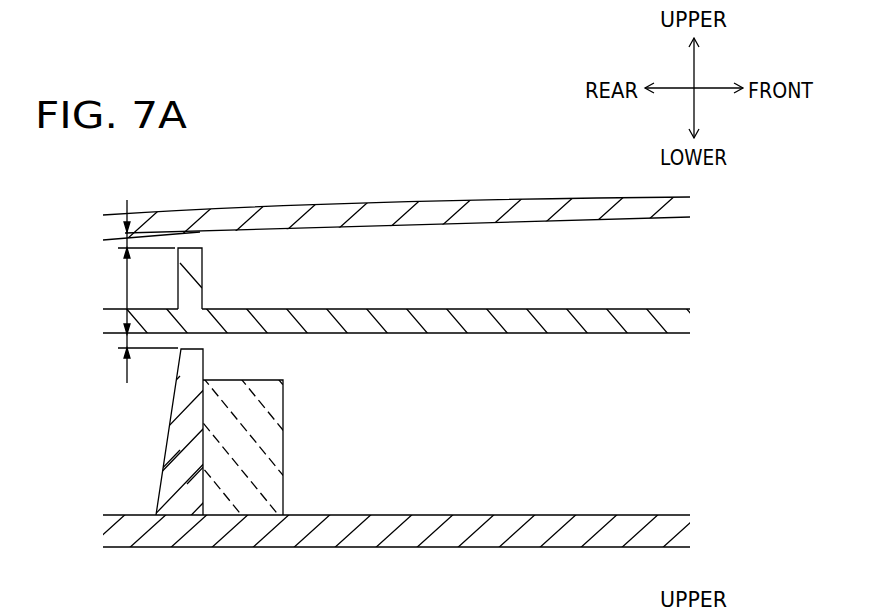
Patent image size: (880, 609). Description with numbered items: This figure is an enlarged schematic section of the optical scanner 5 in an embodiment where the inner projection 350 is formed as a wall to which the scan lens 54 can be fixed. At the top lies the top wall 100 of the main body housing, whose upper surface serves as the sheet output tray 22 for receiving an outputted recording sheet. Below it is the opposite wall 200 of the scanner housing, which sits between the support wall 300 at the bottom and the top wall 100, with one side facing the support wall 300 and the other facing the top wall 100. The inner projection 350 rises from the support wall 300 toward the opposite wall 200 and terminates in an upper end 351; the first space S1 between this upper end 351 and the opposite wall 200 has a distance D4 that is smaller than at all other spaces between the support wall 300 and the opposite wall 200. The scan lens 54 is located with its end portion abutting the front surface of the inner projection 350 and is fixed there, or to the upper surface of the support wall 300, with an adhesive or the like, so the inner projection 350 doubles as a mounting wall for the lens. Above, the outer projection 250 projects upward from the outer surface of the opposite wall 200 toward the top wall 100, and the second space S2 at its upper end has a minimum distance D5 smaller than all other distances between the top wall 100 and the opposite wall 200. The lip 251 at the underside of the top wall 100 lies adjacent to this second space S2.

The top wall 100 is at (412, 197).
The sheet output tray 22 is at (303, 205).
The projecting lip of upper panel 251 is at (200, 232).
The optical scanner 5 is at (555, 292).
The opposite wall 200 is at (406, 285).
The outer projection 250 is at (207, 285).
The second space S2 is at (207, 242).
The first space S1 is at (205, 342).
The minimum distance of the second space D5 is at (133, 285).
The distance of the first space D4 is at (134, 355).
The support wall 300 is at (351, 417).
The inner projection 350 is at (146, 448).
The upper end 351 is at (192, 348).
The scan lens 54 is at (268, 477).